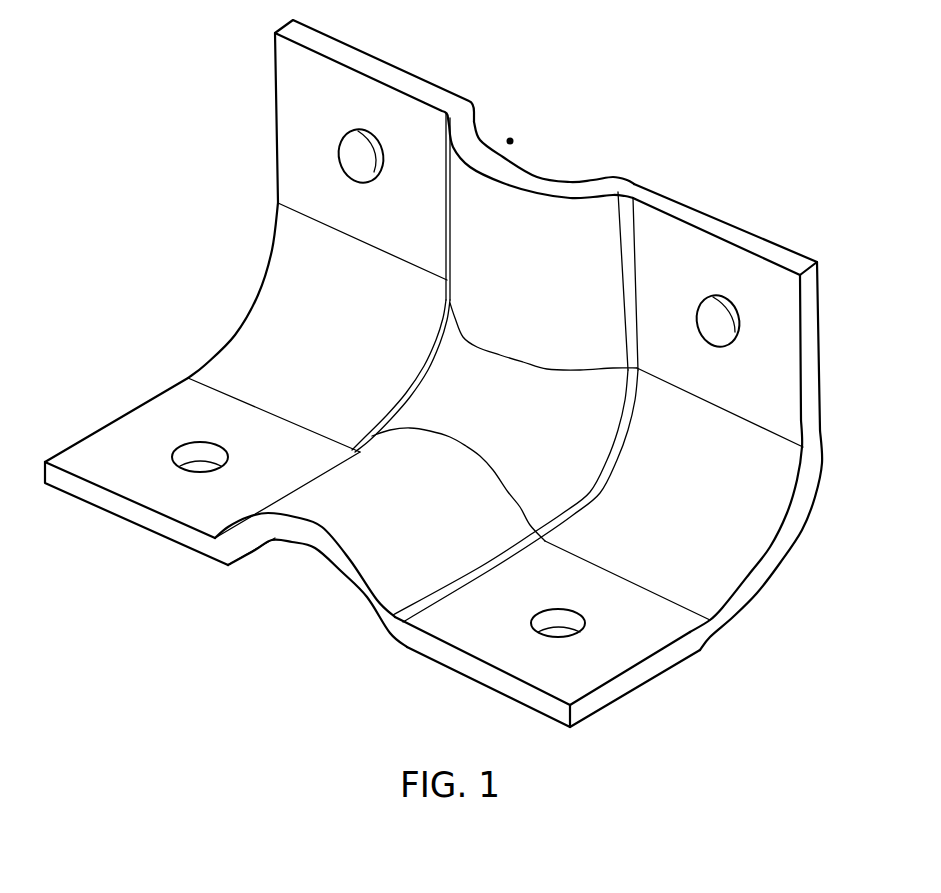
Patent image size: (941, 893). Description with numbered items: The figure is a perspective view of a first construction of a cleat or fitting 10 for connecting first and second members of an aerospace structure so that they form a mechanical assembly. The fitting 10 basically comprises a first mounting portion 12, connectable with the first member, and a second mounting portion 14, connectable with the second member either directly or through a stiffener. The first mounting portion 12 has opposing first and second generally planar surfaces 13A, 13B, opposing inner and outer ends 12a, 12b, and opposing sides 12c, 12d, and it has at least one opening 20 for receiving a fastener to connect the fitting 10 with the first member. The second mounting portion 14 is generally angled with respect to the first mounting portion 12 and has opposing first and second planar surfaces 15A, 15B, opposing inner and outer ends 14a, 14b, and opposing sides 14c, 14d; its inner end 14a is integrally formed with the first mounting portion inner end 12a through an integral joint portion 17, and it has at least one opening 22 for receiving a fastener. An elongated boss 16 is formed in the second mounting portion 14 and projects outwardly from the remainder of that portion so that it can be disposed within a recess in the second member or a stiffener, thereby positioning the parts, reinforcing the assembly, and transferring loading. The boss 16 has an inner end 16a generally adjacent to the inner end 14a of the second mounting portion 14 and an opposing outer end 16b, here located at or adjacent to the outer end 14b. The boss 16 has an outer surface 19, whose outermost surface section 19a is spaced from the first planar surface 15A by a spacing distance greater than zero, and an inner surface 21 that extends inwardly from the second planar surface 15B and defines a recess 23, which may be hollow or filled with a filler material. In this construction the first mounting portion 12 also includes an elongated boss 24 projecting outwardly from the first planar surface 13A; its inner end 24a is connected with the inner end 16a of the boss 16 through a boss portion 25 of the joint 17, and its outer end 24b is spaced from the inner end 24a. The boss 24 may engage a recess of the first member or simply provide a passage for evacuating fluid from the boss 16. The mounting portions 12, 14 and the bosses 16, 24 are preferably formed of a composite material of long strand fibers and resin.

The fitting 10 is at (128, 128).
The first mounting portion 12 is at (86, 414).
The inner end of first mounting portion 12a is at (252, 403).
The outer end of first mounting portion 12b is at (122, 510).
The side of first mounting portion 12c is at (623, 685).
The side of first mounting portion 12d is at (140, 400).
The first planar surface of first mounting portion 13A is at (657, 617).
The second planar surface of first mounting portion 13B is at (473, 680).
The second mounting portion 14 is at (872, 328).
The inner end of second mounting portion 14a is at (757, 427).
The outer end of second mounting portion 14b is at (723, 228).
The side of second mounting portion 14c is at (823, 405).
The side of second mounting portion 14d is at (275, 100).
The first planar surface of second mounting portion 15A is at (293, 155).
The second planar surface of second mounting portion 15B is at (785, 247).
The elongated boss 16 is at (441, 294).
The inner end of boss 16a is at (495, 355).
The outer end of boss 16b is at (578, 188).
The joint portion 17 is at (757, 558).
The outer surface of boss 19 is at (600, 270).
The outermost surface section 19a is at (517, 295).
The opening 20 is at (200, 455).
The inner surface of boss 21 is at (537, 178).
The opening 22 is at (723, 317).
The recess 23 is at (512, 138).
The elongated boss 24 is at (370, 456).
The inner end of first mounting portion boss 24a is at (495, 470).
The outer end of first mounting portion boss 24b is at (307, 533).
The boss portion 25 is at (586, 428).